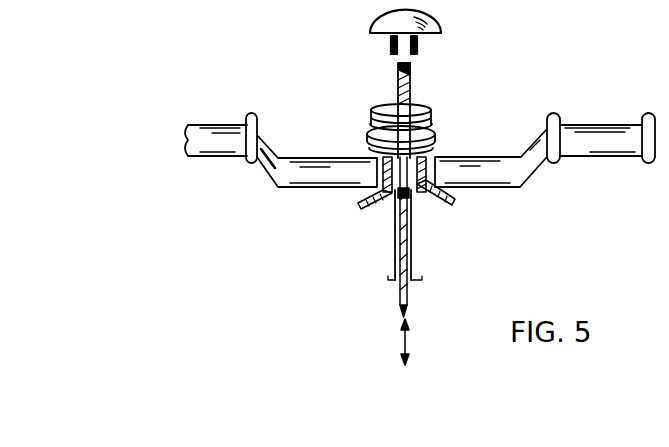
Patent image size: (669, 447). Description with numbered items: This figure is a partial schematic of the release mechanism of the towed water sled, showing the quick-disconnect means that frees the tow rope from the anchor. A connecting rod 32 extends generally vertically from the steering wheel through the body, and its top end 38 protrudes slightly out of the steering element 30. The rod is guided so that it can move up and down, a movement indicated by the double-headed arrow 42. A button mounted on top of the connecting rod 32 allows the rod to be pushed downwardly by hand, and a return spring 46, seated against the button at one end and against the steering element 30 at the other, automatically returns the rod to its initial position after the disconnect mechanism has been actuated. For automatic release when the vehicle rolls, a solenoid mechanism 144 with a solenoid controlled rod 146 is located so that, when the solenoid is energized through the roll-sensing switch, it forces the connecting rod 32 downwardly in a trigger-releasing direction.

The steering element 30 is at (518, 170).
The connecting rod 32 is at (405, 240).
The top end 38 is at (401, 75).
The double-headed arrow 42 is at (403, 333).
The return spring 46 is at (362, 111).
The solenoid mechanism 144 is at (430, 157).
The solenoid controlled rod 146 is at (413, 160).